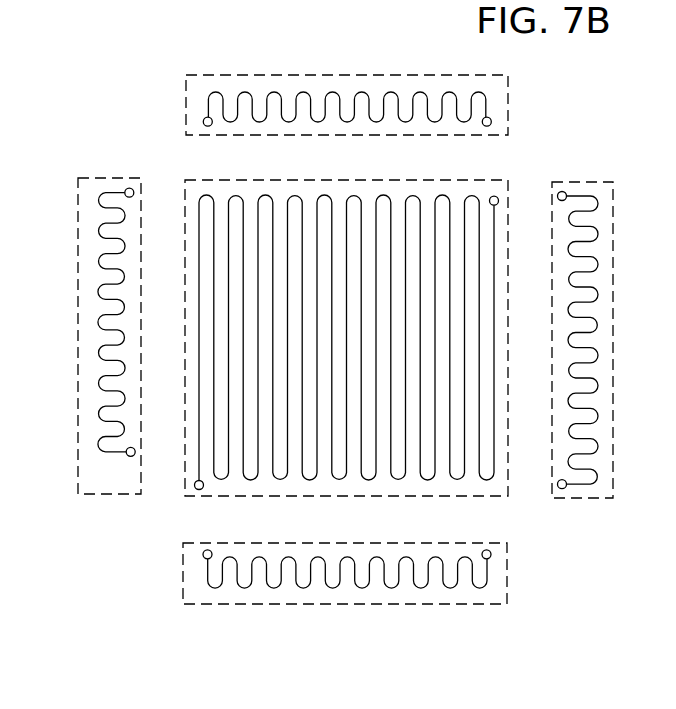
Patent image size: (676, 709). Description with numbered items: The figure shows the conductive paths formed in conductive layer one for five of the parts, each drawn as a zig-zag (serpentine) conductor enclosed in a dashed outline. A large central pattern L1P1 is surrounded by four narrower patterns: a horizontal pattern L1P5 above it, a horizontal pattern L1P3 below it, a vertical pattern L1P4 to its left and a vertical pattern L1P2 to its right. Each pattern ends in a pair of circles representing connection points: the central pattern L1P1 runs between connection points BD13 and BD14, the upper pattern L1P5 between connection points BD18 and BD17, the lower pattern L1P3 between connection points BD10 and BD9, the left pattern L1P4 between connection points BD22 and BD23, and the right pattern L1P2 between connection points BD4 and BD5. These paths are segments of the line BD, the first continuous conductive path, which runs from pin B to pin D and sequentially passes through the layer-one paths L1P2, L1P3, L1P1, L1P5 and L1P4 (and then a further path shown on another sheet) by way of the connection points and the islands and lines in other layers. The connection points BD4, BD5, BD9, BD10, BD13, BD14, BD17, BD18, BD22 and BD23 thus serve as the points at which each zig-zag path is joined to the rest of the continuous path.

The conductive layer L1 path for part P1 L1P1 is at (293, 178).
The conductive layer L1 path for part P2 L1P2 is at (612, 396).
The conductive layer L1 path for part P3 L1P3 is at (397, 605).
The conductive layer L1 path for part P4 L1P4 is at (80, 282).
The conductive layer L1 path for part P5 L1P5 is at (413, 73).
The connection point BD4 is at (563, 192).
The connection point BD5 is at (563, 489).
The connection point BD9 is at (490, 556).
The connection point BD10 is at (203, 556).
The connection point BD13 is at (201, 490).
The connection point BD14 is at (494, 196).
The connection point BD17 is at (492, 121).
The connection point BD18 is at (204, 121).
The connection point BD22 is at (129, 188).
The connection point BD23 is at (127, 454).